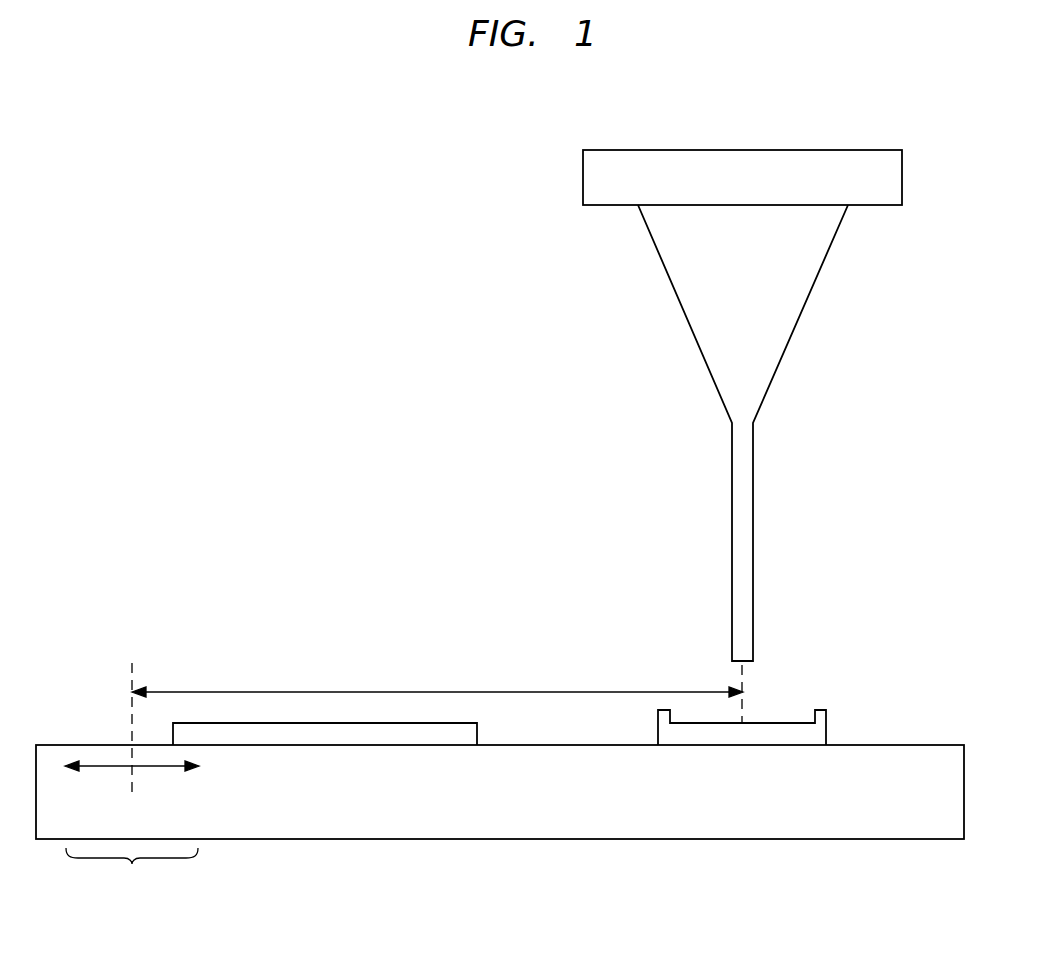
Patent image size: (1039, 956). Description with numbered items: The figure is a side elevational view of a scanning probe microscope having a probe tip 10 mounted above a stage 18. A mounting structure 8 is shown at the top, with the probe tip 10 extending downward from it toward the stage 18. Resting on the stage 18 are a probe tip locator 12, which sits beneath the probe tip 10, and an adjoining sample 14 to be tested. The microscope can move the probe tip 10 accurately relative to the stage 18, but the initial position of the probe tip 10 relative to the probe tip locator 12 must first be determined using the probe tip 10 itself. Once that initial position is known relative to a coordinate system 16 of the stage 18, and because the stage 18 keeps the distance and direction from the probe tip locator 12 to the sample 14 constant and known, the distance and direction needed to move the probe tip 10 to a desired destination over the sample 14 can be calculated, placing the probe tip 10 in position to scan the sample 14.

The transducer mount 8 is at (828, 165).
The probe tip 10 is at (754, 545).
The probe tip locator 12 is at (827, 726).
The sample 14 is at (478, 735).
The coordinate system 16 is at (404, 778).
The stage 18 is at (965, 797).